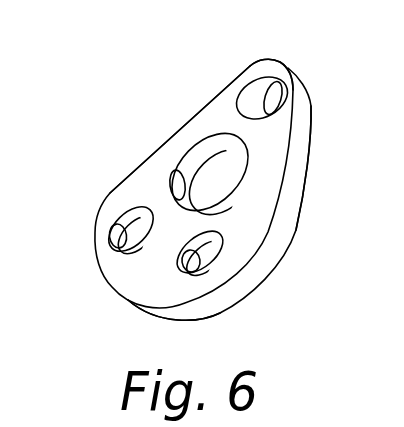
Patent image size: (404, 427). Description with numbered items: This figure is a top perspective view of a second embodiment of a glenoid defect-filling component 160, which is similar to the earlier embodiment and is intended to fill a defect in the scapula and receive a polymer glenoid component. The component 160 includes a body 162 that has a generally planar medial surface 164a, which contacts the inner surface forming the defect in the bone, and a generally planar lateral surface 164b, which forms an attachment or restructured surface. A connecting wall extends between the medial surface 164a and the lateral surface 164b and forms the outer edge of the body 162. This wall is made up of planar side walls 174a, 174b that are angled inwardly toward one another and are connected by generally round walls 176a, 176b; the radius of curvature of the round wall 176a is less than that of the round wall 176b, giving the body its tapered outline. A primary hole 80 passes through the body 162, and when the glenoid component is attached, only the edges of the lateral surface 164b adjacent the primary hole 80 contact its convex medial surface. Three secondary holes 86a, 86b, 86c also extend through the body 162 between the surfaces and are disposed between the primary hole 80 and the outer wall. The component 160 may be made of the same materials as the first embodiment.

The glenoid defect-filling component 160 is at (114, 103).
The body 162 is at (288, 131).
The primary hole 80 is at (175, 179).
The secondary hole 86a is at (279, 96).
The secondary hole 86b is at (109, 235).
The secondary hole 86c is at (206, 272).
The medial surface 164a is at (305, 194).
The lateral surface 164b is at (207, 112).
The planar side wall 174a is at (133, 172).
The planar side wall 174b is at (282, 218).
The round wall 176a is at (284, 64).
The round wall 176b is at (141, 307).